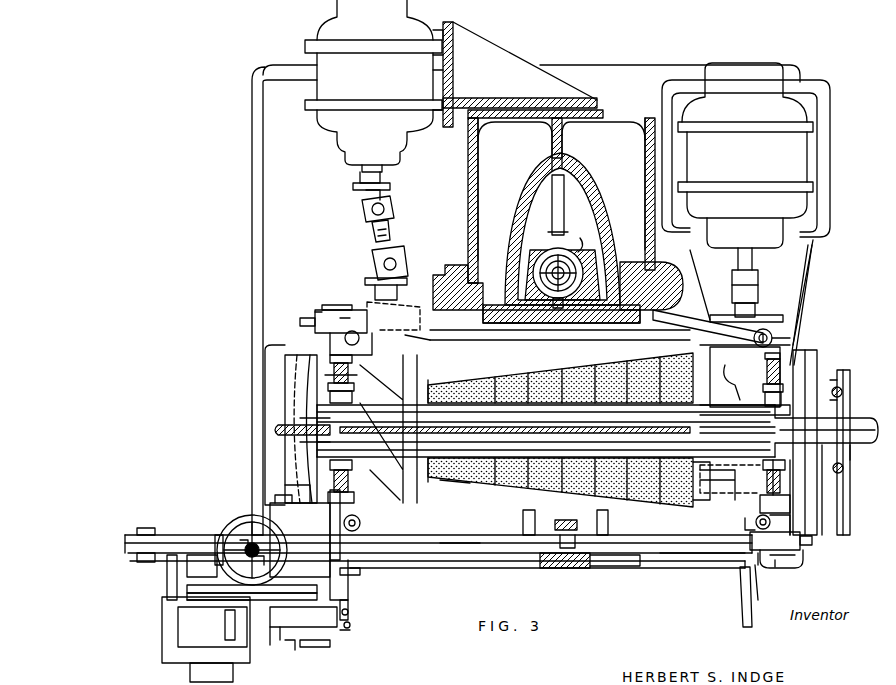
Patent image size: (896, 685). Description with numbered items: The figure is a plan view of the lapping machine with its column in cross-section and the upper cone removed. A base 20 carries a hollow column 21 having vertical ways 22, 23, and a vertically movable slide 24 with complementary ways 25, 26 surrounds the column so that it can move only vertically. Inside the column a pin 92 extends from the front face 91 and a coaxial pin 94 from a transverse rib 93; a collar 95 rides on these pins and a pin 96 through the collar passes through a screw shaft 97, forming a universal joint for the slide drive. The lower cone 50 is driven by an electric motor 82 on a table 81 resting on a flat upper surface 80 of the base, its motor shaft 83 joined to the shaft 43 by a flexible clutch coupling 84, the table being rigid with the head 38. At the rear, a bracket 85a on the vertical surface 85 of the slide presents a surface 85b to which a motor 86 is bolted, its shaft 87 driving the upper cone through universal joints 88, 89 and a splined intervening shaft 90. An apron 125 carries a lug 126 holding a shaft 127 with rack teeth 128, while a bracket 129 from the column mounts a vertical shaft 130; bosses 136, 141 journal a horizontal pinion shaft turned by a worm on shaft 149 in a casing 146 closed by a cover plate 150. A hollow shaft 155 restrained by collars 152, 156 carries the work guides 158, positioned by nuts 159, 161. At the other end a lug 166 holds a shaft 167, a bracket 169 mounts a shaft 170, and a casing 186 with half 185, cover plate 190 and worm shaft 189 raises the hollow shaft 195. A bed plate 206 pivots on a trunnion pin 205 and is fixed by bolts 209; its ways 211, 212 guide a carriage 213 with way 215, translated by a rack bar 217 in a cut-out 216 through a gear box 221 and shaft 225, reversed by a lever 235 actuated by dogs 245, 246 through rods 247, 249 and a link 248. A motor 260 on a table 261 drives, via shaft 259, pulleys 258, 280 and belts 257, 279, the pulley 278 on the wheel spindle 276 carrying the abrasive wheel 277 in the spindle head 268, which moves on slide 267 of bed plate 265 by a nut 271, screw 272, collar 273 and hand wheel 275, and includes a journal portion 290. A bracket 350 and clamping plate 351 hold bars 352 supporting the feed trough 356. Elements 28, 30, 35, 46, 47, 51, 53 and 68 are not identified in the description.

The base 20 is at (258, 203).
The column 21 is at (586, 185).
The vertical way 22 is at (545, 319).
The vertical way 23 is at (640, 325).
The slide 24 is at (470, 138).
The way 25 is at (455, 276).
The way 26 is at (655, 272).
The base 28 is at (463, 540).
The bracket 30 is at (715, 483).
The frame column 35 is at (296, 378).
The head 38 is at (736, 388).
The shaft 43 is at (756, 308).
The housing 46 is at (388, 429).
The cone wheel 47 is at (430, 386).
The lower cone 50 is at (645, 500).
The cone edge 51 is at (540, 488).
The bearing block 53 is at (745, 378).
The plate 68 is at (418, 340).
The upper surface 80 is at (820, 165).
The table 81 is at (808, 150).
The electric motor 82 is at (790, 112).
The motor shaft 83 is at (748, 262).
The flexible clutch coupling 84 is at (758, 285).
The vertical flat surface 85 is at (530, 104).
The bracket 85a is at (455, 72).
The vertical flat surface 85b is at (432, 33).
The electric motor 86 is at (318, 35).
The motor shaft 87 is at (382, 178).
The universal joint 88 is at (362, 206).
The universal joint 89 is at (398, 252).
The intervening shaft 90 is at (374, 232).
The front face 91 is at (508, 325).
The pin 92 is at (560, 325).
The transverse rib 93 is at (590, 240).
The pin 94 is at (562, 175).
The collar 95 is at (574, 288).
The pin 96 is at (540, 286).
The screw shaft 97 is at (598, 248).
The apron 125 is at (452, 545).
The lug 126 is at (746, 527).
The shaft 127 is at (758, 520).
The rack teeth 128 is at (774, 526).
The bracket 129 is at (712, 329).
The vertical shaft 130 is at (803, 322).
The boss 136 is at (776, 340).
The boss 141 is at (790, 562).
The casing 146 is at (804, 555).
The shaft 149 is at (813, 540).
The cover plate 150 is at (780, 565).
The collar 152 is at (792, 500).
The hollow shaft 155 is at (760, 371).
The collar 156 is at (760, 356).
The work guides 158 is at (358, 405).
The nut 159 is at (767, 470).
The nut 161 is at (768, 398).
The lug 166 is at (362, 525).
The shaft 167 is at (362, 522).
The bracket 169 is at (370, 327).
The shaft 170 is at (360, 340).
The casing half 185 is at (318, 312).
The casing 186 is at (330, 308).
The shaft 189 is at (306, 318).
The cover plate 190 is at (342, 310).
The hollow shaft 195 is at (352, 380).
The trunnion pin 205 is at (566, 522).
The bed plate 206 is at (528, 540).
The bolts 209 is at (150, 530).
The way 211 is at (756, 580).
The way 212 is at (690, 560).
The carriage 213 is at (350, 572).
The way 215 is at (380, 572).
The cut-out portion 216 is at (600, 568).
The rack bar 217 is at (562, 570).
The gear box 221 is at (350, 602).
The shaft 225 is at (350, 614).
The reversing lever 235 is at (310, 647).
The dog 245 is at (168, 575).
The dog 246 is at (742, 600).
The rod 247 is at (274, 640).
The link 248 is at (275, 659).
The rod 249 is at (350, 627).
The belt 257 is at (187, 590).
The drive pulley 258 is at (202, 566).
The motor shaft 259 is at (230, 618).
The electric motor 260 is at (195, 675).
The table 261 is at (165, 655).
The bed plate 265 is at (227, 535).
The movable slide 267 is at (270, 535).
The spindle head 268 is at (275, 512).
The nut 271 is at (262, 550).
The screw 272 is at (270, 560).
The collar 273 is at (343, 637).
The hand wheel 275 is at (240, 516).
The wheel spindle 276 is at (312, 440).
The abrasive wheel 277 is at (278, 428).
The pulley 278 is at (303, 616).
The belt 279 is at (190, 601).
The pulley 280 is at (212, 627).
The journal portion 290 is at (286, 485).
The bracket 350 is at (840, 370).
The clamping plate 351 is at (850, 382).
The bars 352 is at (843, 393).
The feed trough 356 is at (853, 490).